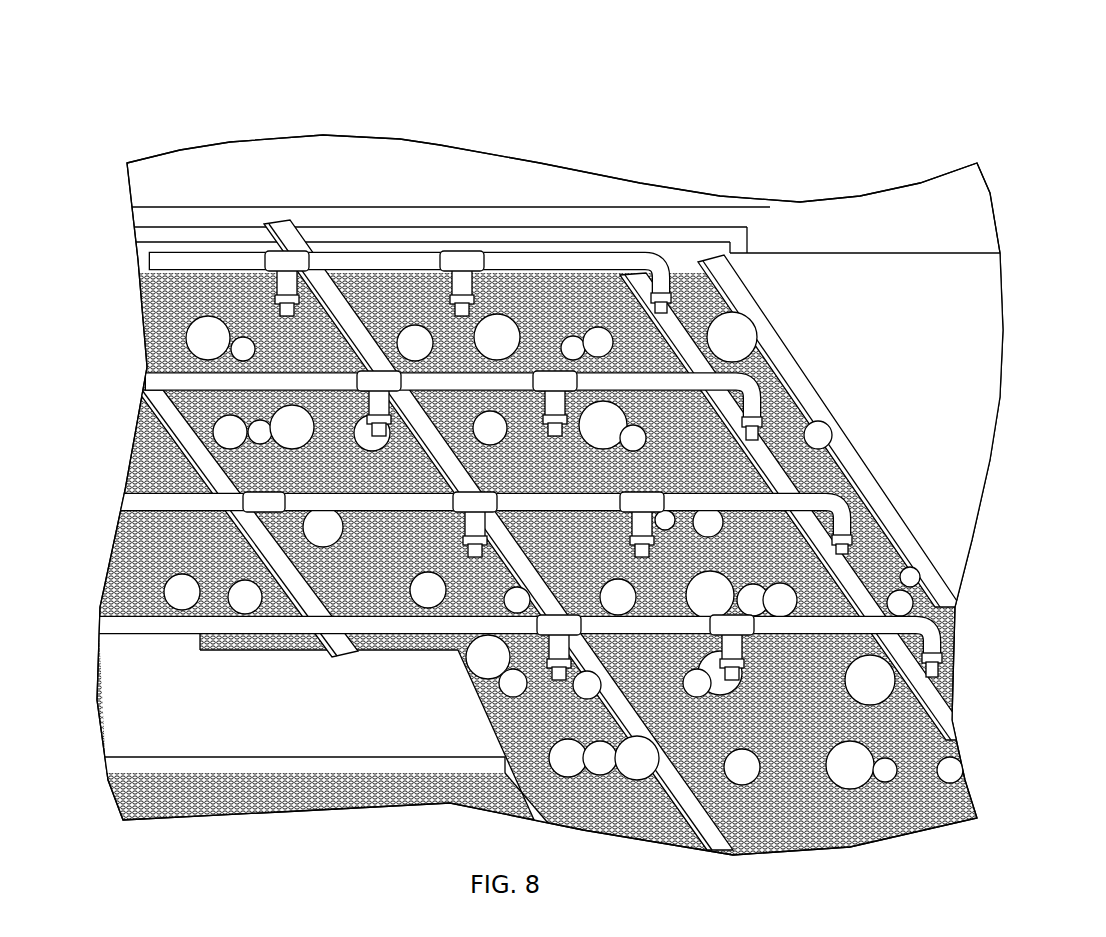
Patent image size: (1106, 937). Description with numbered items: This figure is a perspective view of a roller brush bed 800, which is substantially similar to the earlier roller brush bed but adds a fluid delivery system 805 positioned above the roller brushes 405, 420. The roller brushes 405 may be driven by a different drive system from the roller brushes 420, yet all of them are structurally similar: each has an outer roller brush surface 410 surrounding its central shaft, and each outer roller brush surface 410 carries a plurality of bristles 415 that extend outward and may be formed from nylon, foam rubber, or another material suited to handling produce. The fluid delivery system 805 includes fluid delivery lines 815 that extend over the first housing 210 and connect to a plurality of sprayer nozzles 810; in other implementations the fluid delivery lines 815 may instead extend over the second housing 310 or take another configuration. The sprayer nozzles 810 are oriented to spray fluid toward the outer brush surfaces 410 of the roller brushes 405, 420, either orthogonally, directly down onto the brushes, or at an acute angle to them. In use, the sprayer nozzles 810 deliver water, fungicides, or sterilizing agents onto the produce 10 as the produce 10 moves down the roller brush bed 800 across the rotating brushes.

The roller brush bed 800 is at (219, 98).
The fluid delivery system 805 is at (260, 190).
The sprayer nozzles 810 is at (287, 313).
The fluid delivery lines 815 is at (150, 262).
The first housing 210 is at (148, 207).
The second housing 310 is at (794, 292).
The roller brushes 405 is at (682, 284).
The outer roller brush surface 410 is at (705, 262).
The bristles 415 is at (738, 258).
The roller brushes 420 is at (795, 415).
The produce 10 is at (436, 602).